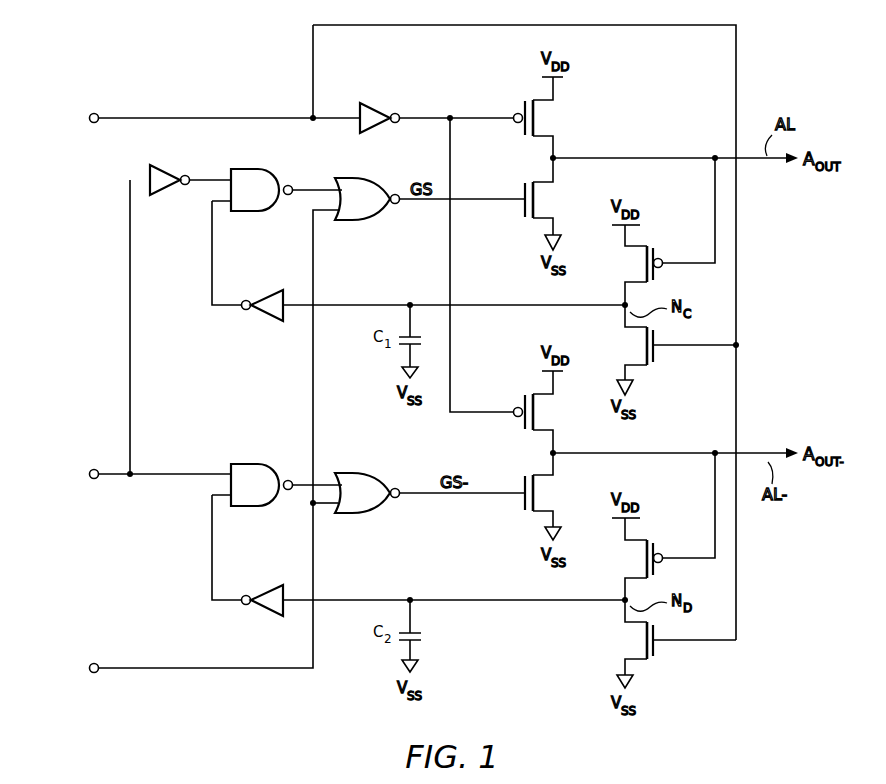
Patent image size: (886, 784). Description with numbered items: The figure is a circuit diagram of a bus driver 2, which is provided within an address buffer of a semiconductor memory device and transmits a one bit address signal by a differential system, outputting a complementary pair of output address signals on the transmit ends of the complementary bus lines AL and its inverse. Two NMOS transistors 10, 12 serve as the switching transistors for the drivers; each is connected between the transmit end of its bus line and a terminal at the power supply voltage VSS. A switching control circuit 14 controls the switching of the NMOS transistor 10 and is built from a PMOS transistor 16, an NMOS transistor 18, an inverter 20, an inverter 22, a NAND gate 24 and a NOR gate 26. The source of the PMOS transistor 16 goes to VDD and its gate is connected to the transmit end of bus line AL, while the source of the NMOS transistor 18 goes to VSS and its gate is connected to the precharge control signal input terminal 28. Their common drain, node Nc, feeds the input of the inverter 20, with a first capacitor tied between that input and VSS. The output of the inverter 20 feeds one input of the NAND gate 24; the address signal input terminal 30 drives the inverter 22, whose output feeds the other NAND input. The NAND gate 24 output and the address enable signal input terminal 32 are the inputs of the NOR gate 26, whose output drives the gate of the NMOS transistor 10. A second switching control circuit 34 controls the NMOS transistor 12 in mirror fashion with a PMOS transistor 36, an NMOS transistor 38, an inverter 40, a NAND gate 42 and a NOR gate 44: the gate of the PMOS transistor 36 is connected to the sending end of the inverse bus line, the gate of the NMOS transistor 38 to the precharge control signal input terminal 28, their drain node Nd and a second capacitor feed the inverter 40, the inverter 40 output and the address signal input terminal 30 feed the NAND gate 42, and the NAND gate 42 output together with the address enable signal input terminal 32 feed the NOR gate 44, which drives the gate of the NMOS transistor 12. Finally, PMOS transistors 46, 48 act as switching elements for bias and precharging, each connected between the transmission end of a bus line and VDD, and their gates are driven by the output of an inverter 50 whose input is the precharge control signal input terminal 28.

The bus driver 2 is at (757, 90).
The NMOS transistor 10 is at (520, 212).
The NMOS transistor 12 is at (520, 505).
The switching control circuit 14 is at (277, 246).
The PMOS transistor 16 is at (655, 252).
The NMOS transistor 18 is at (655, 358).
The inverter 20 is at (266, 320).
The inverter 22 is at (172, 165).
The NAND gate 24 is at (258, 212).
The NOR gate 26 is at (380, 178).
The precharge control signal input terminal 28 is at (92, 112).
The address signal input terminal 30 is at (92, 482).
The address enable signal input terminal 32 is at (92, 676).
The switching control circuit 34 is at (316, 548).
The PMOS transistor 36 is at (655, 548).
The NMOS transistor 38 is at (655, 653).
The inverter 40 is at (266, 615).
The NAND gate 42 is at (257, 507).
The NOR gate 44 is at (378, 473).
The PMOS transistor 46 is at (519, 105).
The PMOS transistor 48 is at (519, 400).
The inverter 50 is at (378, 104).